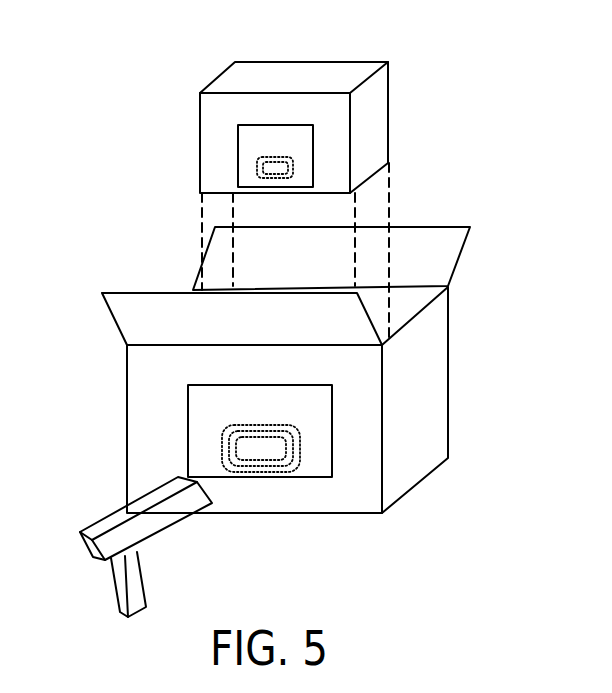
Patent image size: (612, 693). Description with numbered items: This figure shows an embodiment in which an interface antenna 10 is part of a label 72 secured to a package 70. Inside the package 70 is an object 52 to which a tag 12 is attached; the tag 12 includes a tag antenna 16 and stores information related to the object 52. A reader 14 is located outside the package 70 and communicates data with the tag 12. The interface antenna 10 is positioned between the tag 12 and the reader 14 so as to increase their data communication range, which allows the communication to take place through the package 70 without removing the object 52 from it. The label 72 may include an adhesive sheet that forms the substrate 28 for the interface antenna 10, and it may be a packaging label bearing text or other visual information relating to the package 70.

The interface antenna 10 is at (263, 473).
The tag 12 is at (278, 118).
The reader 14 is at (107, 523).
The tag antenna 16 is at (296, 165).
The substrate 28 is at (332, 460).
The object 52 is at (365, 67).
The package 70 is at (425, 345).
The label 72 is at (332, 458).